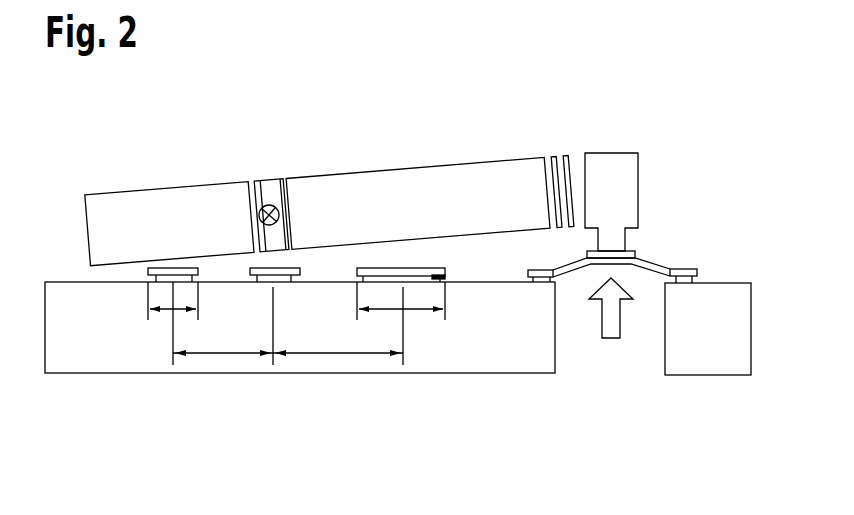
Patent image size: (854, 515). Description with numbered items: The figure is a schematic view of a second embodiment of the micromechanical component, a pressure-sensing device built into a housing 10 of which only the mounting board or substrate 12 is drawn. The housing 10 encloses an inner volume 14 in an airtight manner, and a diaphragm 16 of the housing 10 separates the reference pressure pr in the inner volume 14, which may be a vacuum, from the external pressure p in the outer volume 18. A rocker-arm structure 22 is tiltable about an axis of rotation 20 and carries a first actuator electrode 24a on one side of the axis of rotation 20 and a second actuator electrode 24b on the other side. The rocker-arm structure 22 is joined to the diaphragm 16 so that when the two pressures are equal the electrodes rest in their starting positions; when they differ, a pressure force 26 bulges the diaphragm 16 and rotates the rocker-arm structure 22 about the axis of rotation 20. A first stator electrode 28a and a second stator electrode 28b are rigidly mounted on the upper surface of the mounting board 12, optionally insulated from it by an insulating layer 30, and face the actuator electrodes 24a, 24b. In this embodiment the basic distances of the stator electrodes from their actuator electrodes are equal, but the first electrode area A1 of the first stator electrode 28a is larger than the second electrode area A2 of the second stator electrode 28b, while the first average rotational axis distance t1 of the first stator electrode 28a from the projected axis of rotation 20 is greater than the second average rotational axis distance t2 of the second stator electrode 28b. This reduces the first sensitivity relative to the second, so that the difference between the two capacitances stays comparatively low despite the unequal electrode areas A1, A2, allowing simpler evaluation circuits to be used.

The housing 10 is at (713, 388).
The mounting board/substrate 12 is at (72, 360).
The inner volume 14 is at (742, 164).
The diaphragm 16 is at (660, 267).
The outer volume 18 is at (672, 490).
The axis of rotation 20 is at (270, 206).
The rocker-arm structure 22 is at (392, 162).
The first actuator electrode 24a is at (507, 175).
The second actuator electrode 24b is at (120, 203).
The pressure force 26 is at (610, 340).
The first stator electrode 28a is at (449, 270).
The second stator electrode 28b is at (150, 270).
The insulating layer 30 is at (446, 276).
The first electrode area A1 is at (415, 312).
The second electrode area A2 is at (168, 312).
The first average rotational axis distance t1 is at (340, 355).
The second average rotational axis distance t2 is at (225, 353).